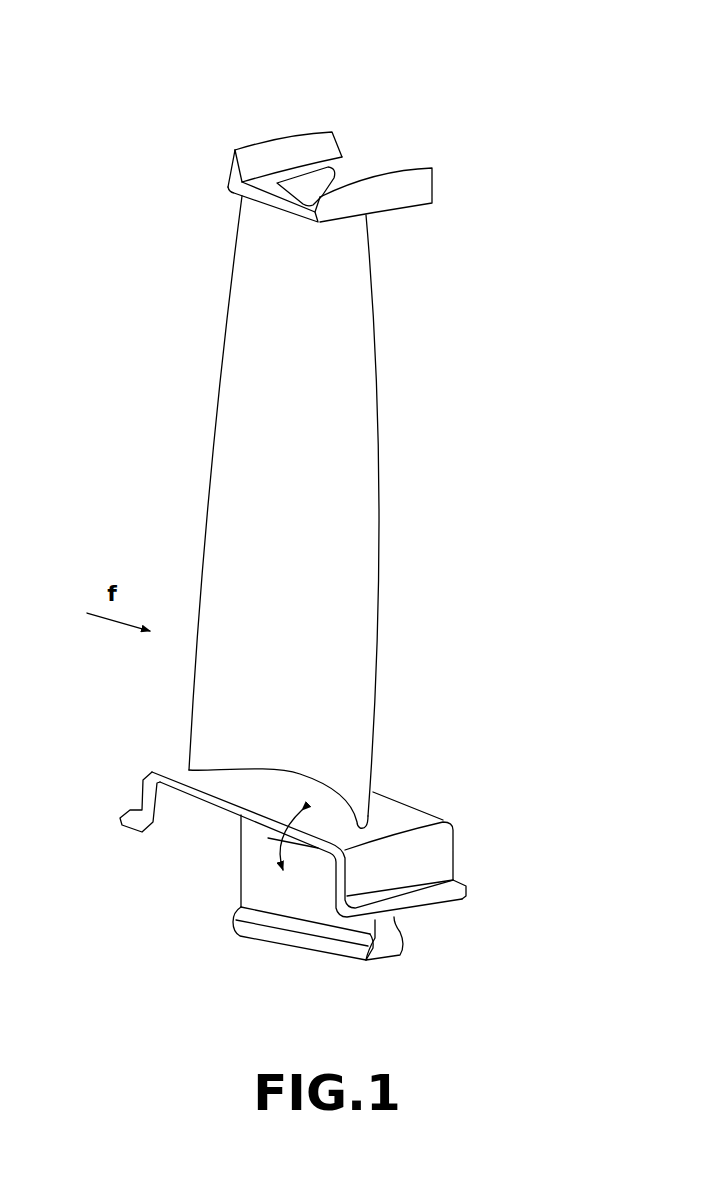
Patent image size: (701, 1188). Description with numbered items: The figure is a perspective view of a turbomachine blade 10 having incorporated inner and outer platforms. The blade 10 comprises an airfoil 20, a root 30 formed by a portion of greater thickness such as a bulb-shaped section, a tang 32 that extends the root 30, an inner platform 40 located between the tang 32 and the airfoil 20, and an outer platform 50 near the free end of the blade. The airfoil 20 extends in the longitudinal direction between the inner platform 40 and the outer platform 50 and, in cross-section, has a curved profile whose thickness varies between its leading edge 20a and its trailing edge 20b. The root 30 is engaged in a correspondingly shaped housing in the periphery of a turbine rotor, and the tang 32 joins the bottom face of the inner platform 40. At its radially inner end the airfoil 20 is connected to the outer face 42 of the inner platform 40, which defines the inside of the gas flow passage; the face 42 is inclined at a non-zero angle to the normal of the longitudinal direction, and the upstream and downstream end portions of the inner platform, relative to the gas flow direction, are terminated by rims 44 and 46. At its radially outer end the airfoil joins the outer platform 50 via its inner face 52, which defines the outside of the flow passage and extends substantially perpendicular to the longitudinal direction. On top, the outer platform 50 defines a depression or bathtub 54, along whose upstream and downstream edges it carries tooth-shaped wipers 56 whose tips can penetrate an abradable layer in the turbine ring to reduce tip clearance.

The blade 10 is at (178, 511).
The airfoil 20 is at (362, 493).
The leading edge 20a is at (221, 392).
The trailing edge 20b is at (378, 411).
The root 30 is at (416, 948).
The tang 32 is at (270, 877).
The inner platform 40 is at (402, 820).
The outer face of the inner platform 42 is at (287, 802).
The upstream rim 44 is at (143, 797).
The downstream rim 46 is at (428, 858).
The outer platform 50 is at (230, 142).
The inner face of the outer platform 52 is at (273, 210).
The bathtub 54 is at (323, 183).
The wipers 56 is at (300, 135).